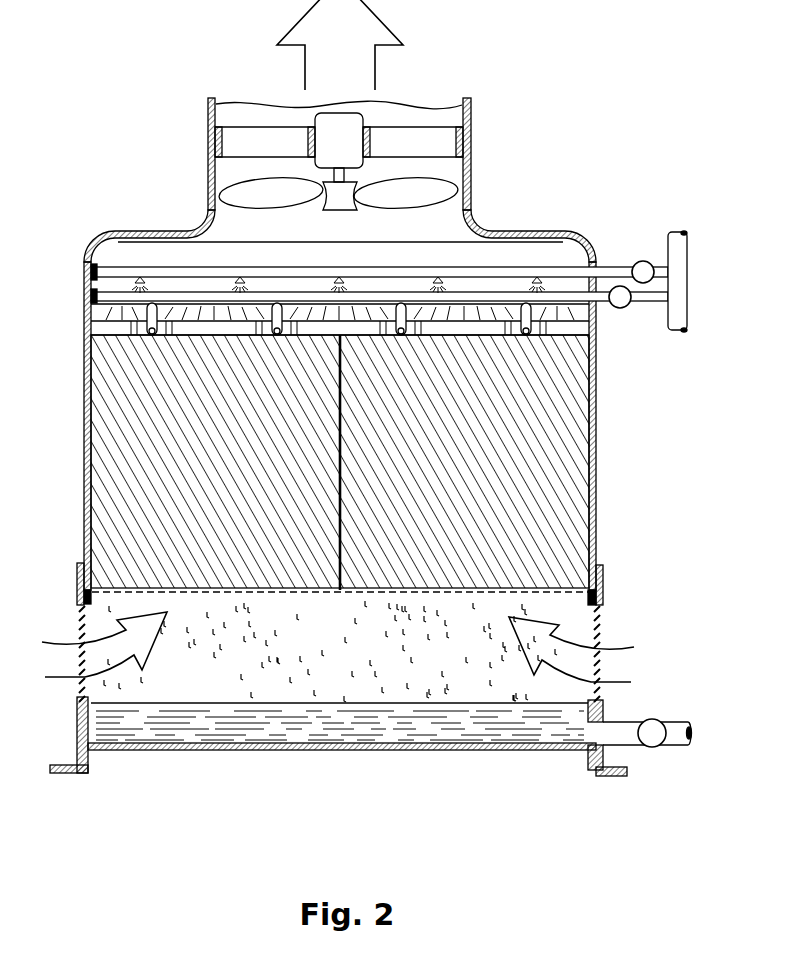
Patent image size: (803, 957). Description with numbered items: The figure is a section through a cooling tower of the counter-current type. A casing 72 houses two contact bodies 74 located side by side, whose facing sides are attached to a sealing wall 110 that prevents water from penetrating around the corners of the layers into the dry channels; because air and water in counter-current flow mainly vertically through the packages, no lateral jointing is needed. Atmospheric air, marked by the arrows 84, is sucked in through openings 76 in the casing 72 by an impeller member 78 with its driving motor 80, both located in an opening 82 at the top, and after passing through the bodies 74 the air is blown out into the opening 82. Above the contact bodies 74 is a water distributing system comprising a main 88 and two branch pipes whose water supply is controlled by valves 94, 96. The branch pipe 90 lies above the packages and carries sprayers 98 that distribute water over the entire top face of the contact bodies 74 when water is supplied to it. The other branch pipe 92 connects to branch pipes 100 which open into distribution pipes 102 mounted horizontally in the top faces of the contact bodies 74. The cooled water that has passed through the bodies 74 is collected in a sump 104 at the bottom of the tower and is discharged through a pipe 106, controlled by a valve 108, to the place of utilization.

The casing 72 is at (597, 425).
The contact bodies 74 is at (113, 500).
The openings 76 is at (598, 620).
The impeller member 78 is at (440, 190).
The driving motor 80 is at (354, 127).
The opening 82 is at (459, 103).
The arrows 84 is at (95, 658).
The main 88 is at (684, 282).
The branch pipe 90 is at (612, 268).
The branch pipe 92 is at (657, 301).
The valve 94 is at (646, 261).
The valve 96 is at (620, 309).
The sprayers 98 is at (537, 278).
The branch pipes 100 is at (147, 313).
The distribution pipes 102 is at (149, 333).
The sump 104 is at (240, 751).
The pipe 106 is at (676, 730).
The valve 108 is at (652, 748).
The sealing wall 110 is at (340, 592).